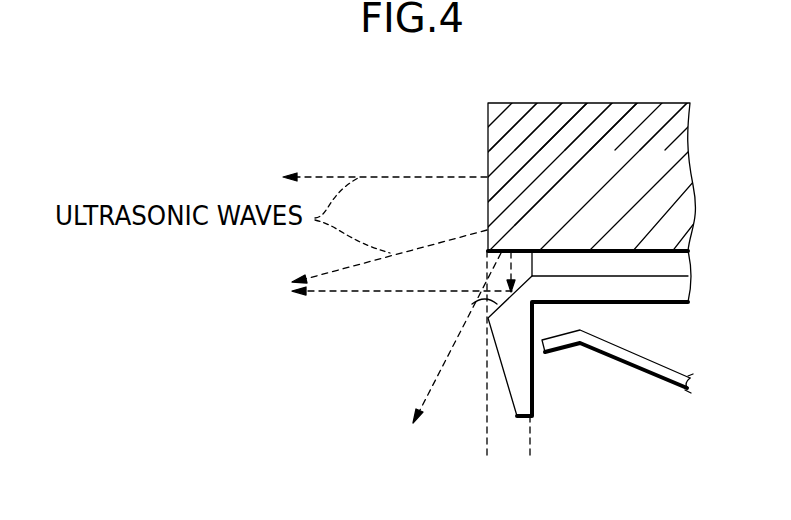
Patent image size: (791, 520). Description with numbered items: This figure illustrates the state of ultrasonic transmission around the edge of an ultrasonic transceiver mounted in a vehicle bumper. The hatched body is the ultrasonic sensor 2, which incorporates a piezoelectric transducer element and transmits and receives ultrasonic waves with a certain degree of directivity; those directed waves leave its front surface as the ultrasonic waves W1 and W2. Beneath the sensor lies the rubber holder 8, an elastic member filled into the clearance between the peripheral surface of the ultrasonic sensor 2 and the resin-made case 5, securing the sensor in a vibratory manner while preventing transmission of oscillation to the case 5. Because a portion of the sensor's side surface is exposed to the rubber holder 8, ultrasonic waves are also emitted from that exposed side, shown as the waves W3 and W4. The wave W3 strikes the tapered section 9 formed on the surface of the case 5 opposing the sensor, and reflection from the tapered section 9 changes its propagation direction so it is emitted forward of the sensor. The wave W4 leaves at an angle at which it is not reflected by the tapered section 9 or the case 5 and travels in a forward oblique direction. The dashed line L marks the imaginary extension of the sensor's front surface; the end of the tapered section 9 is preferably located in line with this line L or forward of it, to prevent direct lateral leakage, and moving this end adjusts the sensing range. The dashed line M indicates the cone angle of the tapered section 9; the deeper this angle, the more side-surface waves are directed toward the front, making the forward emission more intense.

The ultrasonic sensor 2 is at (610, 115).
The case 5 is at (515, 357).
The rubber holder 8 is at (622, 258).
The tapered section 9 is at (472, 304).
The ultrasonic wave W1 is at (385, 165).
The ultrasonic wave W2 is at (389, 250).
The ultrasonic wave W3 is at (402, 280).
The ultrasonic wave W4 is at (454, 338).
The dashed line L is at (483, 369).
The cone angle M is at (531, 452).